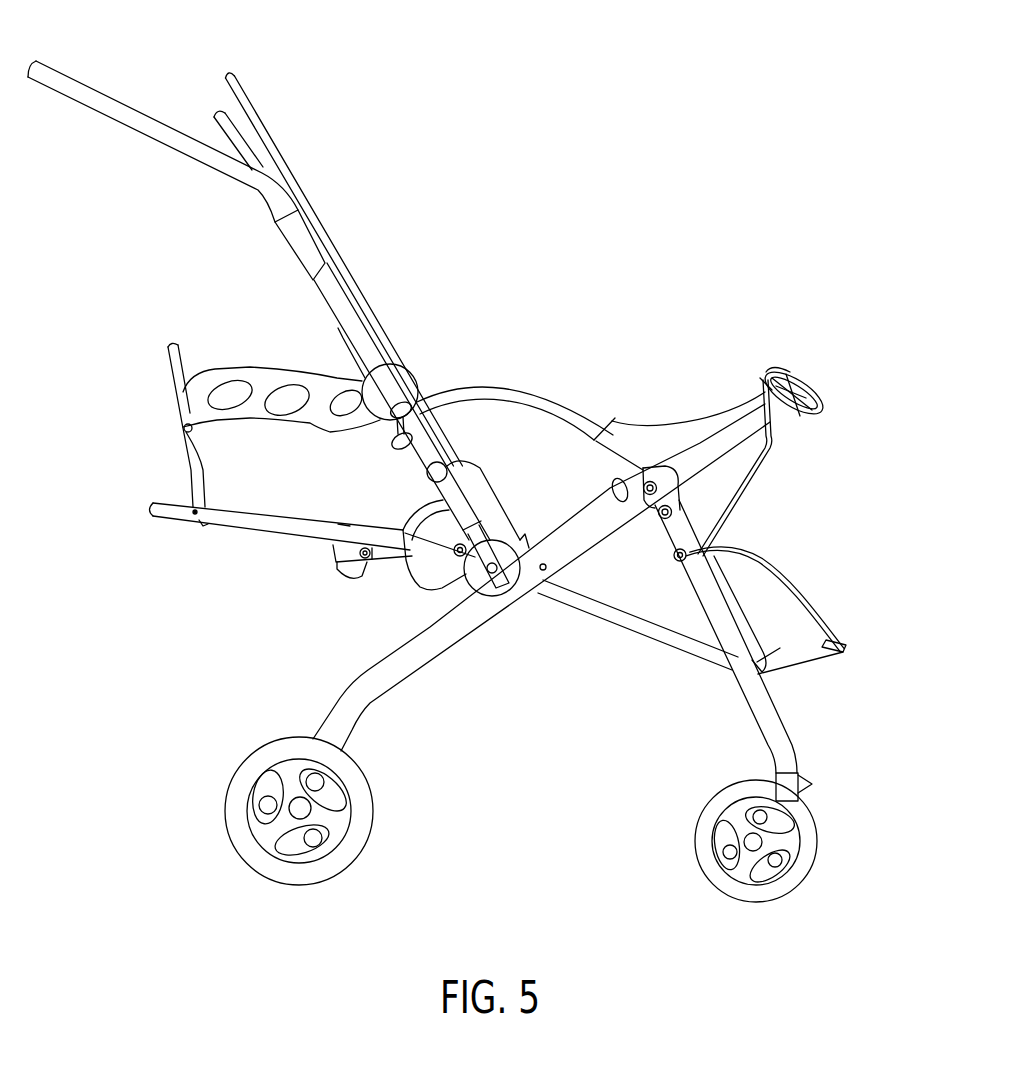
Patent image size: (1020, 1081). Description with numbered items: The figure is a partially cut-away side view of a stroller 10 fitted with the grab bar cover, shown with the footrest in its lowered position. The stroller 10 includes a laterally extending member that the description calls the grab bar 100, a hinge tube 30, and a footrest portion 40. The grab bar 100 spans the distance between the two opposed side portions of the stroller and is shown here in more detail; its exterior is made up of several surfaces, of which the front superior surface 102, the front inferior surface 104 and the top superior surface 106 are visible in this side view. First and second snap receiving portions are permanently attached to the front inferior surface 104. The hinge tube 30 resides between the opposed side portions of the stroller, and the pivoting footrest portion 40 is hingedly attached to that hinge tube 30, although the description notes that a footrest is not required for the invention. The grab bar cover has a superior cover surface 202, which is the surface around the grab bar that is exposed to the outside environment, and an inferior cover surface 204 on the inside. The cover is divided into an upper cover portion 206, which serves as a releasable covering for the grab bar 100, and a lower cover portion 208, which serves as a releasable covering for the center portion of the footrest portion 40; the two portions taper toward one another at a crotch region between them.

The stroller 10 is at (300, 101).
The hinge tube 30 is at (676, 563).
The footrest portion 40 is at (850, 638).
The grab bar 100 is at (670, 407).
The front superior surface 102 is at (790, 373).
The front inferior surface 104 is at (812, 423).
The top superior surface 106 is at (764, 376).
The superior cover surface 202 is at (748, 487).
The inferior cover surface 204 is at (733, 512).
The upper cover portion 206 is at (823, 397).
The lower cover portion 208 is at (775, 658).